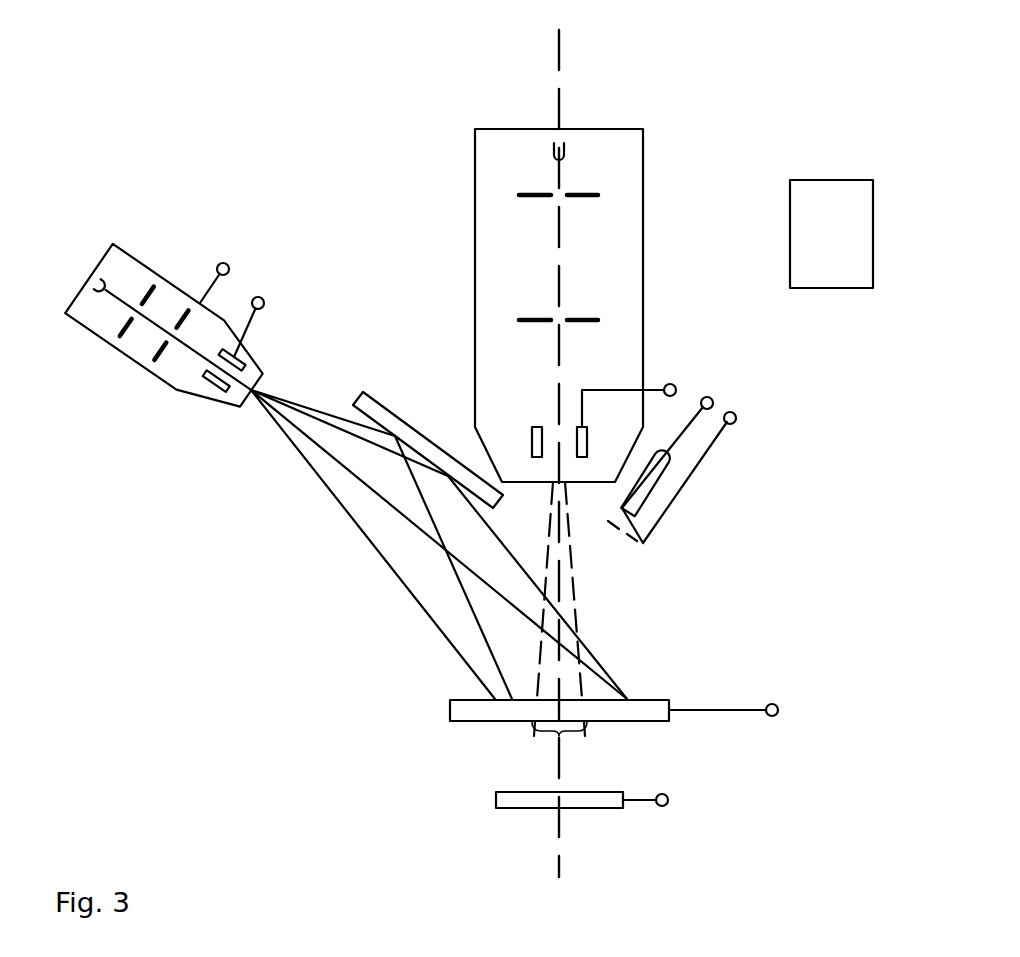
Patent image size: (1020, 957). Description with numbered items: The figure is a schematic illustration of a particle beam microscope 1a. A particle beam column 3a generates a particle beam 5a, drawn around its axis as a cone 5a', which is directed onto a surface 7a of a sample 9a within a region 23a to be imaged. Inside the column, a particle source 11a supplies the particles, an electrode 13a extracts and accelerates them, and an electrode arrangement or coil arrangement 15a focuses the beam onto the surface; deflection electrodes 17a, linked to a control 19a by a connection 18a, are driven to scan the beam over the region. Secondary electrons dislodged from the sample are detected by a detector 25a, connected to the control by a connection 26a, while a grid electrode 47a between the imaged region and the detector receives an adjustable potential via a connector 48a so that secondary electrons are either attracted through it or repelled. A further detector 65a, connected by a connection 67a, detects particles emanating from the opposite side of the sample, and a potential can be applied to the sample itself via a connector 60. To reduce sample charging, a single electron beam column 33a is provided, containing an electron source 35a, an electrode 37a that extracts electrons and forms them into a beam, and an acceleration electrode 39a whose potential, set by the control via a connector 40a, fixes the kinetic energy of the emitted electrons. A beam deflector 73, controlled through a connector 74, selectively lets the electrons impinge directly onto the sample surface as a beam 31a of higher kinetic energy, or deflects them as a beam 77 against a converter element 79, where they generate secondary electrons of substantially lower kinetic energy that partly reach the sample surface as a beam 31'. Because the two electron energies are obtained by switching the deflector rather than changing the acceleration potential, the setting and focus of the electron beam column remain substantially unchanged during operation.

The particle beam microscope 1a is at (732, 102).
The particle beam column 3a is at (643, 160).
The particle beam 5a is at (605, 666).
The particle beam cone 5a' is at (588, 609).
The surface 7a is at (458, 699).
The sample 9a is at (450, 712).
The particle source 11a is at (567, 158).
The electrode 13a is at (532, 199).
The electrode arrangement or coil arrangement 15a is at (532, 324).
The deflection electrodes 17a is at (528, 437).
The connection 18a is at (669, 384).
The control 19a is at (849, 243).
The region 23a is at (564, 745).
The detector 25a is at (655, 497).
The connection 26a is at (709, 397).
The beam 31a is at (353, 520).
The beam 31' is at (499, 567).
The electron beam column 33a is at (98, 337).
The electron source 35a is at (103, 282).
The electrode 37a is at (152, 284).
The acceleration electrode 39a is at (157, 361).
The connector 40a is at (223, 263).
The grid electrode 47a is at (624, 536).
The connector 48a is at (733, 413).
The connector 60 is at (778, 710).
The detector 65a is at (608, 792).
The connection 67a is at (668, 799).
The beam deflector 73 is at (214, 385).
The connector 74 is at (258, 297).
The beam 77 is at (322, 418).
The converter element 79 is at (352, 407).